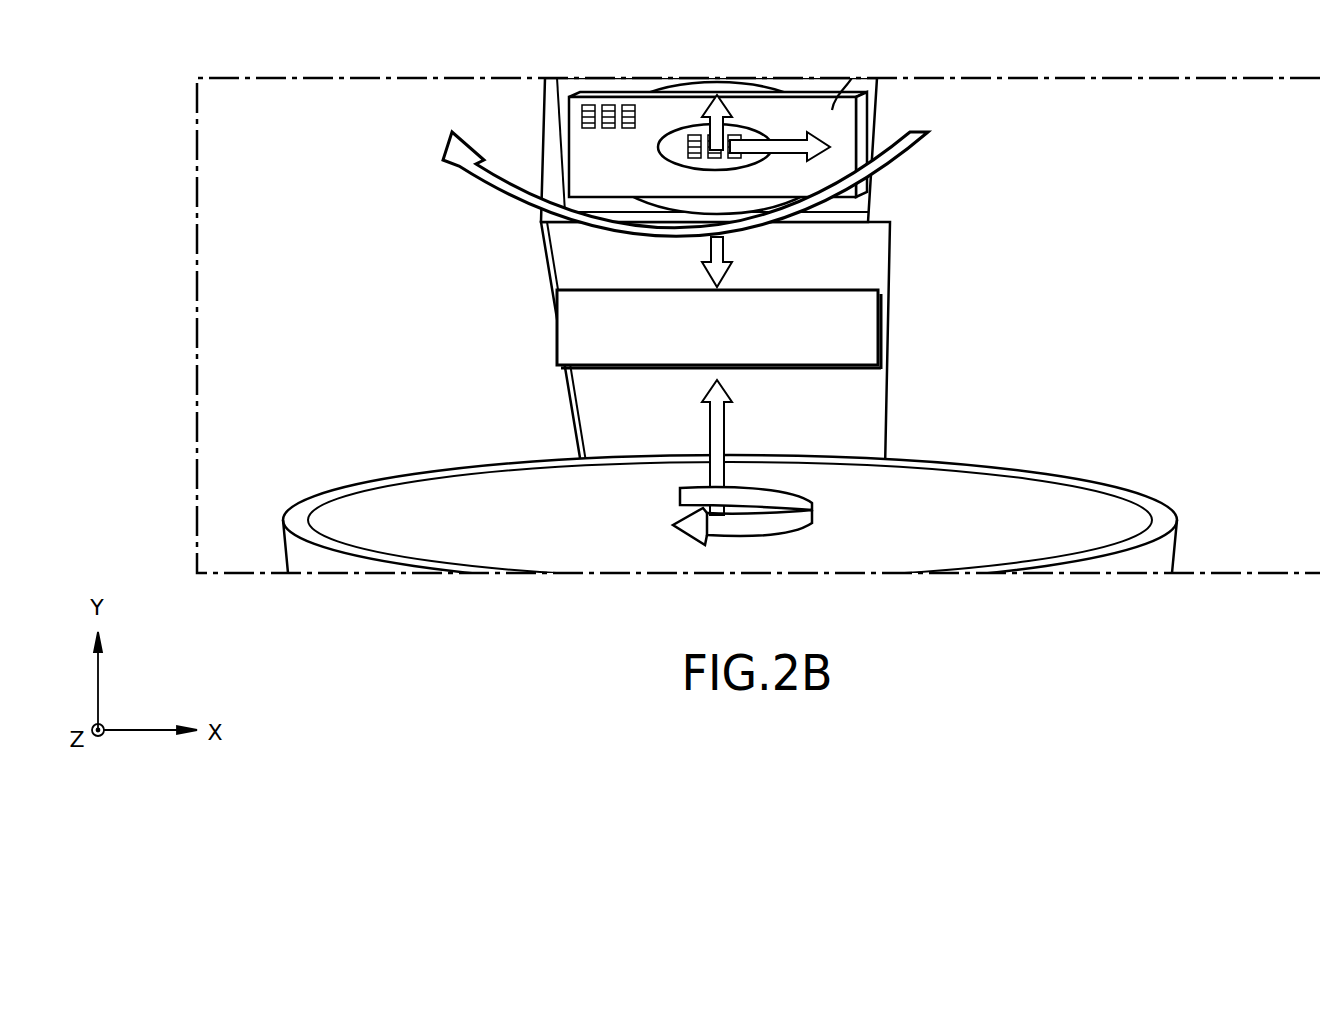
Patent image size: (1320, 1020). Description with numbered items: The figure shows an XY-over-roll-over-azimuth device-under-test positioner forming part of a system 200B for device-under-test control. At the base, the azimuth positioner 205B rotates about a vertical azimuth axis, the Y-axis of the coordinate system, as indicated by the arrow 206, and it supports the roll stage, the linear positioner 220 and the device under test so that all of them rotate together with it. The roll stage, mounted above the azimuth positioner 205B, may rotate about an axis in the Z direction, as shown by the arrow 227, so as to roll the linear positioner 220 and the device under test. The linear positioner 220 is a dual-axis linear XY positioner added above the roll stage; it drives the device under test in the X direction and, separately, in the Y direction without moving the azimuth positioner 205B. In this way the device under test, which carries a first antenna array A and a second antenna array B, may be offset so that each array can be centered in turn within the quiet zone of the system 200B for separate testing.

The system 200B is at (1046, 22).
The linear positioner 220 is at (700, 118).
The arrow 227 is at (918, 132).
The arrow 206 is at (812, 513).
The azimuth positioner 205B is at (466, 503).